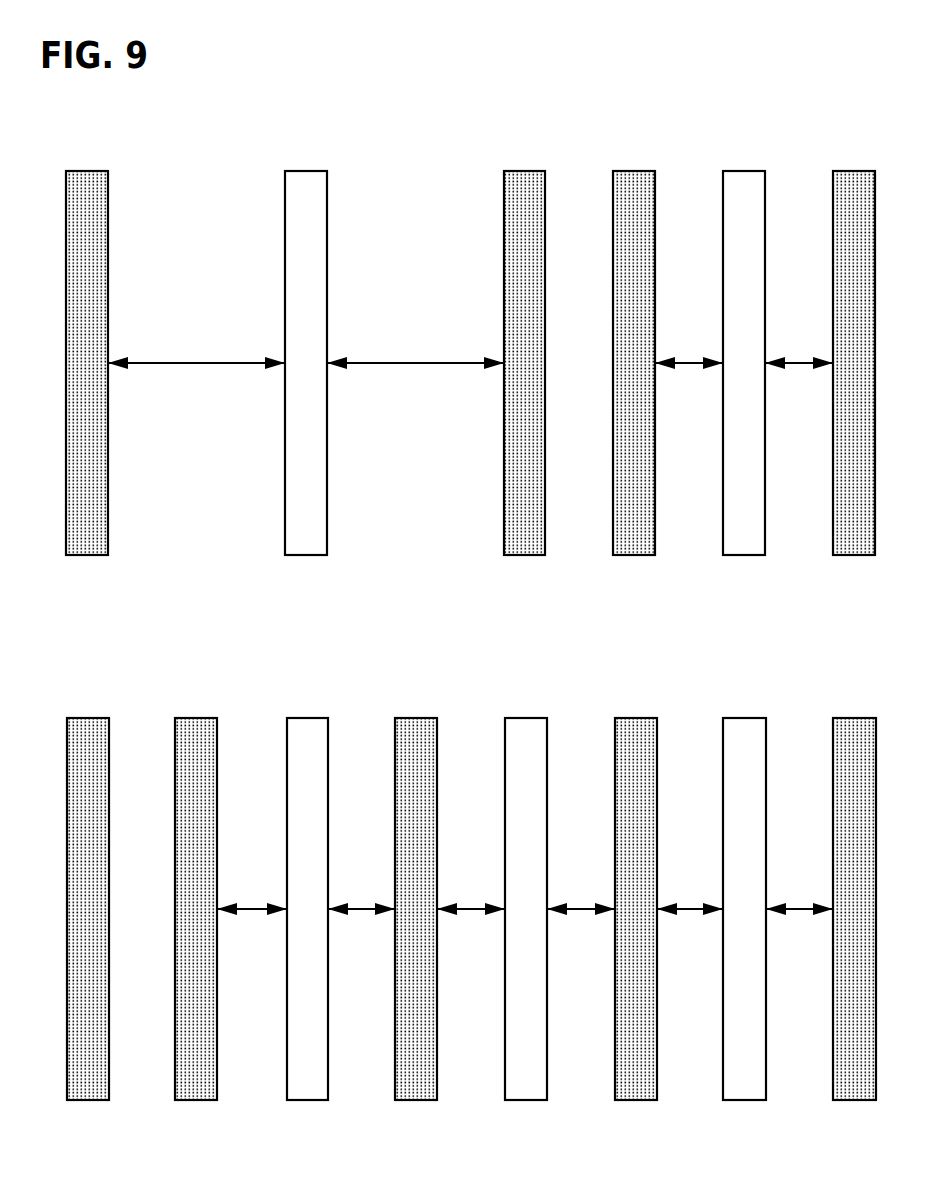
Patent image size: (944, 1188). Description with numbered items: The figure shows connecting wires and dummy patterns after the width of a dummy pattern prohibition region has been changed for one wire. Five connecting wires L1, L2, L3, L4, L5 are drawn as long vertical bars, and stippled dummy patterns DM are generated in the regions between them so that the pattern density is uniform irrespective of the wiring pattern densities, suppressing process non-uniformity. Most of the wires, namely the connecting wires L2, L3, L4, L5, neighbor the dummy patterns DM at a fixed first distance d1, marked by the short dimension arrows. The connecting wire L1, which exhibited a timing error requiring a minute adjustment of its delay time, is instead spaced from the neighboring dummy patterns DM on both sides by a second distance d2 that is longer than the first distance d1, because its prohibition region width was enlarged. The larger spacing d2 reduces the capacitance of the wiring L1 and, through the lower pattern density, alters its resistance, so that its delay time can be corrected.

The dummy pattern DM is at (90, 178).
The connecting wire L1 is at (305, 178).
The connecting wire L2 is at (747, 178).
The connecting wire L3 is at (308, 727).
The connecting wire L4 is at (528, 727).
The connecting wire L5 is at (748, 727).
The first distance d1 is at (525, 657).
The second distance d2 is at (306, 383).